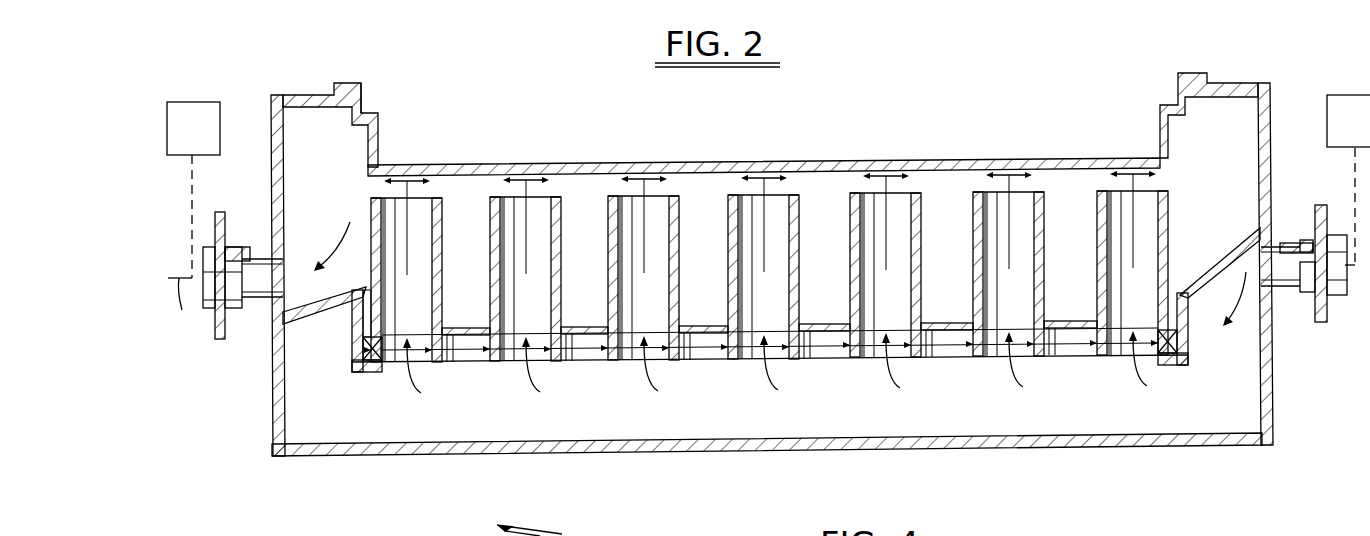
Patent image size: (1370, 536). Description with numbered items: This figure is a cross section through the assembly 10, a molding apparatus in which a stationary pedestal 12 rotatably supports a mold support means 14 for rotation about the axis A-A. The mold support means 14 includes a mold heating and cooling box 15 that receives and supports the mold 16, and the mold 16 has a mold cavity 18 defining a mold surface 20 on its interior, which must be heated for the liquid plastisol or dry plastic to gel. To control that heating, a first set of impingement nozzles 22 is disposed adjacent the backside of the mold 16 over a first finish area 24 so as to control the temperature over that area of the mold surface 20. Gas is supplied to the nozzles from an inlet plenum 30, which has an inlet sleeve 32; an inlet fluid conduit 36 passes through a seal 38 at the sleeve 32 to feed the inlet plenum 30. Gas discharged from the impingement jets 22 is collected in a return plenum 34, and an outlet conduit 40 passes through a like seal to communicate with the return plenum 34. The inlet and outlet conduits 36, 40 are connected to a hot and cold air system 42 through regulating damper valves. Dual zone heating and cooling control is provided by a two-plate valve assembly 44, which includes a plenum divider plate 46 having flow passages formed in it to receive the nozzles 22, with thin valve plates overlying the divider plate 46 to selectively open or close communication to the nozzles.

The assembly 10 is at (1136, 66).
The stationary pedestal 12 is at (220, 342).
The mold support means 14 is at (278, 90).
The mold heating and cooling box 15 is at (340, 458).
The mold 16 is at (360, 145).
The mold cavity 18 is at (386, 108).
The mold surface 20 is at (597, 160).
The first set of impingement nozzles 22 is at (372, 198).
The first finish area 24 is at (836, 172).
The inlet plenum 30 is at (886, 414).
The inlet sleeve 32 is at (1310, 297).
The return plenum 34 is at (331, 220).
The inlet fluid conduit 36 is at (1278, 244).
The seal 38 is at (1309, 232).
The outlet conduit 40 is at (263, 302).
The hot and cold air system 42 is at (207, 104).
The two-plate valve assembly 44 is at (1137, 356).
The plenum divider plate 46 is at (462, 328).